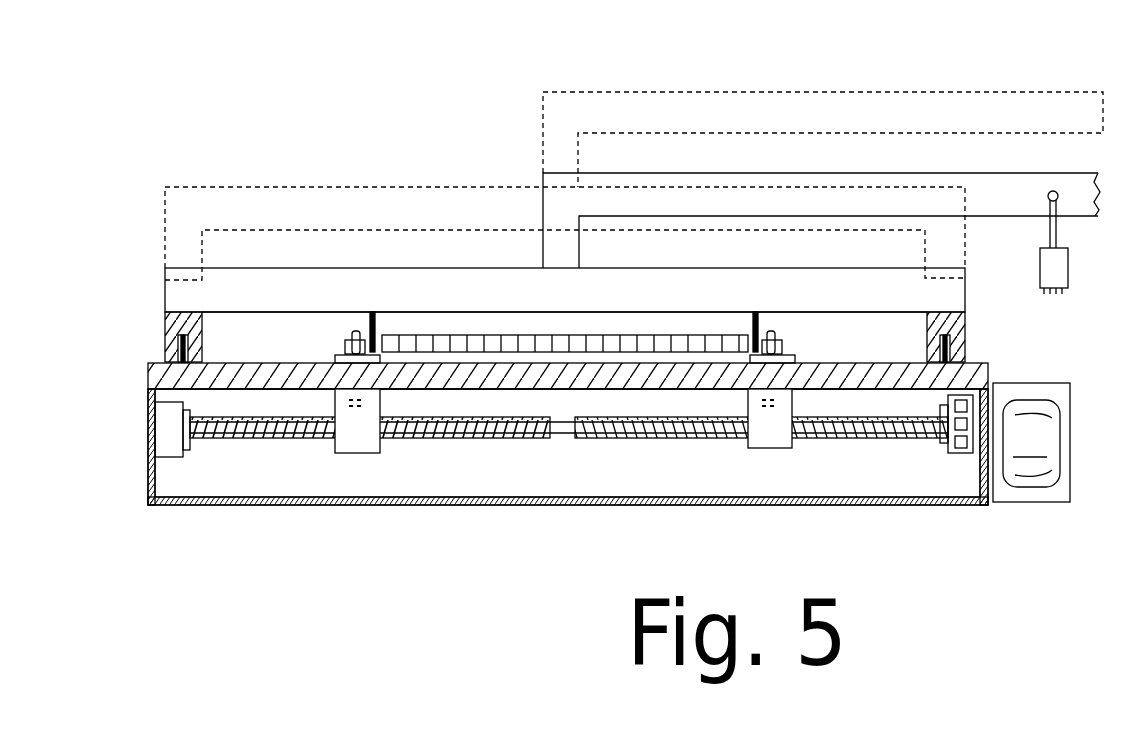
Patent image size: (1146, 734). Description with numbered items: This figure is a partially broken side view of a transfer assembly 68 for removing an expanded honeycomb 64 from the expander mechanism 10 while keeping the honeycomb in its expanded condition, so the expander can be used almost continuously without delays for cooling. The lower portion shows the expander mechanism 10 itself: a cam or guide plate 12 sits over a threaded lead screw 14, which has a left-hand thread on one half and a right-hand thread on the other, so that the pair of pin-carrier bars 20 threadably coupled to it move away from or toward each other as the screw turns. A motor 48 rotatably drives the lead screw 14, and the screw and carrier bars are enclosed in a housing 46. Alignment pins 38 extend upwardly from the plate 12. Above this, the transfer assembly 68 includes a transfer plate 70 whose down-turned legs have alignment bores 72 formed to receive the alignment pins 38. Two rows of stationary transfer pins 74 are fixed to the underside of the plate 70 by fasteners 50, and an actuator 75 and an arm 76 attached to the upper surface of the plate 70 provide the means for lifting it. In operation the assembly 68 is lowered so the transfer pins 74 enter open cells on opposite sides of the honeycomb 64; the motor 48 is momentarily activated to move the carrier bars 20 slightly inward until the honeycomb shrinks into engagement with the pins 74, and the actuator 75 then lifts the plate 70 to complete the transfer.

The expander mechanism 10 is at (196, 533).
The cam or guide plate 12 is at (990, 366).
The threaded lead screw 14 is at (543, 440).
The pin-carrier bar 20 is at (340, 445).
The alignment pin 38 is at (165, 345).
The housing 46 is at (453, 506).
The motor 48 is at (1055, 440).
The fastener 50 is at (345, 346).
The expanded honeycomb 64 is at (600, 342).
The transfer assembly 68 is at (745, 93).
The transfer plate 70 is at (433, 285).
The alignment bore 72 is at (167, 320).
The stationary transfer pin 74 is at (372, 328).
The actuator 75 is at (1070, 266).
The arm 76 is at (563, 248).